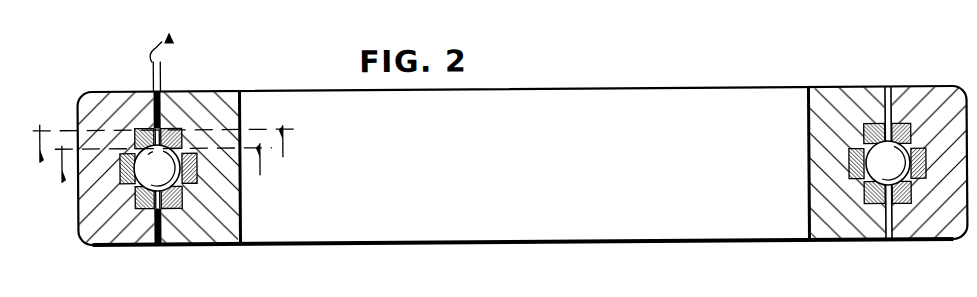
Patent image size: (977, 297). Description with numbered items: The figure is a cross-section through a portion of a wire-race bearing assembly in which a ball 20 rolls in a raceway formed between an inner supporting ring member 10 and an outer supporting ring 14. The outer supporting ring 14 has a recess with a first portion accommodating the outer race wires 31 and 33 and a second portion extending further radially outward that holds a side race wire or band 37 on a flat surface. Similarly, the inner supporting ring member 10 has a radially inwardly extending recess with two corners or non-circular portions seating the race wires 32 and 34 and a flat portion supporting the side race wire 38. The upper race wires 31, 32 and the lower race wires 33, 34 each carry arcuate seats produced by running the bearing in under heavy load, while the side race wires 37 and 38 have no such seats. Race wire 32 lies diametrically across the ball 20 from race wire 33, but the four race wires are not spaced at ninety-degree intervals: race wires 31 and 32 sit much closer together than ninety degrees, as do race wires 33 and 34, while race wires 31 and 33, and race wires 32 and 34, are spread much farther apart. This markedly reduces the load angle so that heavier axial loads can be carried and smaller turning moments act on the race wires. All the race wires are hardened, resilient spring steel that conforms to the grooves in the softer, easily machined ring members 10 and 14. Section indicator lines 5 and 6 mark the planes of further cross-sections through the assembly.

The inner supporting ring member 10 is at (203, 238).
The outer supporting ring 14 is at (124, 238).
The ball 20 is at (522, 165).
The race wire 31 is at (137, 126).
The race wire 32 is at (181, 113).
The race wire 33 is at (140, 207).
The race wire 34 is at (185, 200).
The side race wire 37 is at (120, 168).
The side race wire 38 is at (197, 167).
The section line 5- 5 is at (162, 142).
The section line 6- 6 is at (159, 163).